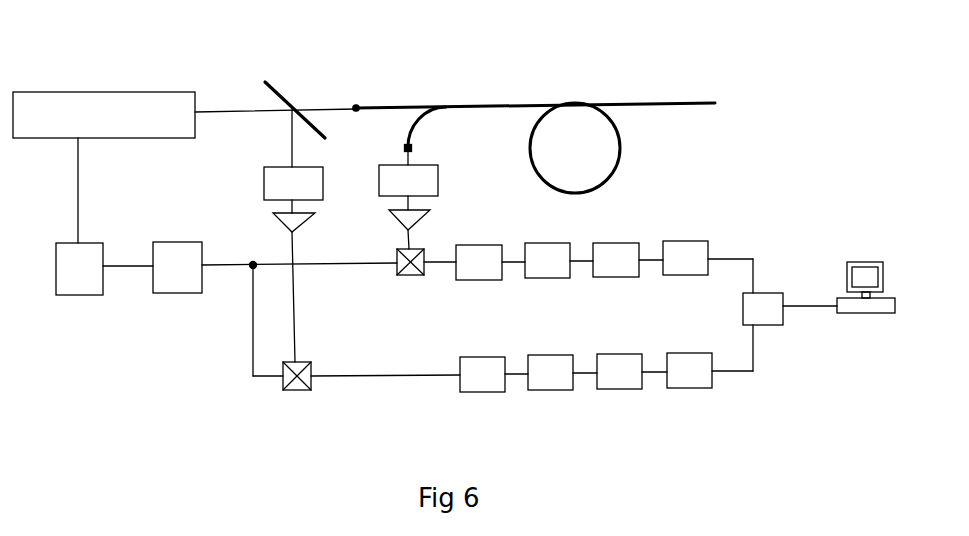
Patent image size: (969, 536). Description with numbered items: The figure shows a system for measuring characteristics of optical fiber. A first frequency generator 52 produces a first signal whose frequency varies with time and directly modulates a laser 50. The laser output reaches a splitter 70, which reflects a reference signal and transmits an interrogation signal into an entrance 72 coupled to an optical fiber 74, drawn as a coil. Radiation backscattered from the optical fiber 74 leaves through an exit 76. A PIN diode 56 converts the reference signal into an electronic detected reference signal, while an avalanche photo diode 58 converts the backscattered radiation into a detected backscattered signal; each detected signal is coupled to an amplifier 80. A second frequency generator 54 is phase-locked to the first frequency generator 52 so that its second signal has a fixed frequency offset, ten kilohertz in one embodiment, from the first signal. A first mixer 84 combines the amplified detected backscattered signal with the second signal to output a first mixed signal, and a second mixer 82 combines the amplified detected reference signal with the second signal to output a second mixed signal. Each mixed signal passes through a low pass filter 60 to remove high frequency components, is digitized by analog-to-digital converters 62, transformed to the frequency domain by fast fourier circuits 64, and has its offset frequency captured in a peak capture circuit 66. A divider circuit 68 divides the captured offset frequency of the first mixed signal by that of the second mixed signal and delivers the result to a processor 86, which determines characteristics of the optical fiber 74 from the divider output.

The laser 50 is at (104, 115).
The first frequency generator 52 is at (79, 269).
The second frequency generator 54 is at (177, 267).
The PIN diode 56 is at (293, 183).
The avalanche photo diode 58 is at (408, 180).
The low pass filter 60 is at (480, 318).
The analog-to-digital converters 62 is at (549, 316).
The fast fourier circuits 64 is at (617, 316).
The peak capture circuit 66 is at (687, 314).
The divider circuit 68 is at (763, 309).
The splitter 70 is at (273, 83).
The entrance 72 is at (357, 105).
The optical fiber 74 is at (618, 162).
The exit 76 is at (412, 147).
The amplifier 80 is at (390, 215).
The second mixer 82 is at (312, 367).
The first mixer 84 is at (423, 278).
The processor 86 is at (847, 272).